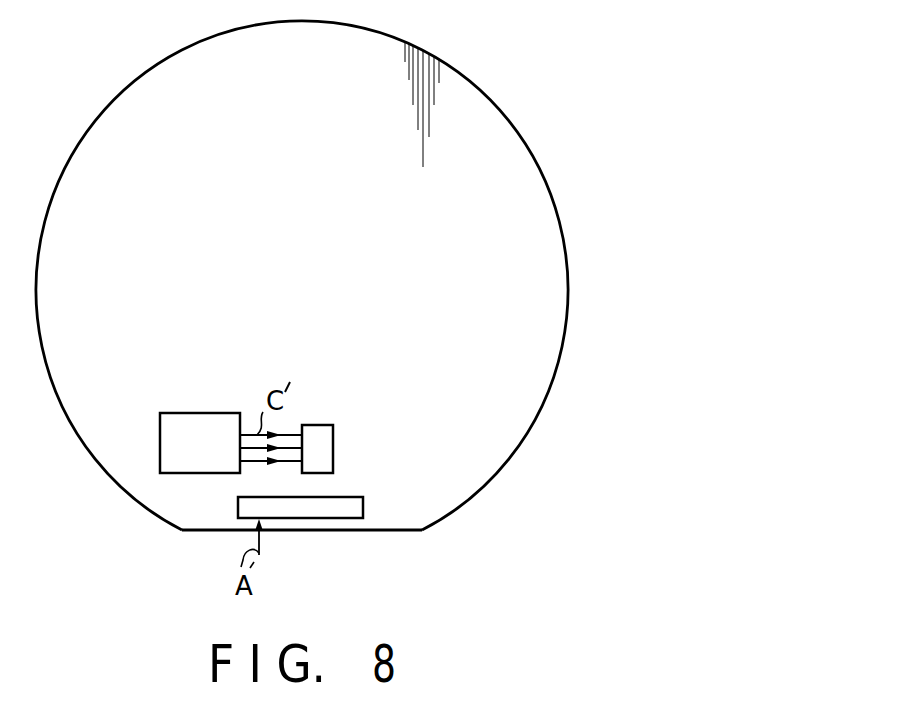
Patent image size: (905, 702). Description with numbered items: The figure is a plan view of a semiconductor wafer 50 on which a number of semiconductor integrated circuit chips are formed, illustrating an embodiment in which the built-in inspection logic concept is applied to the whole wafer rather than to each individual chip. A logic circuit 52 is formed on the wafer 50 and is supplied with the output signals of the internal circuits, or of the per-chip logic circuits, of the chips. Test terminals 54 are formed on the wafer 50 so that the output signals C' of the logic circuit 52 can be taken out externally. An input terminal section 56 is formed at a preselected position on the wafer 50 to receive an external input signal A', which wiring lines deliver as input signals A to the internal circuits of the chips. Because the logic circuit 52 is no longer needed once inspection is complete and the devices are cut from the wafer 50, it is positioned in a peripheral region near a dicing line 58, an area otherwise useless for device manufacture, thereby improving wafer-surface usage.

The semiconductor wafer 50 is at (524, 169).
The logic circuit 52 is at (159, 443).
The test terminals 54 is at (323, 448).
The input terminal section 56 is at (307, 512).
The dicing line 58 is at (203, 531).